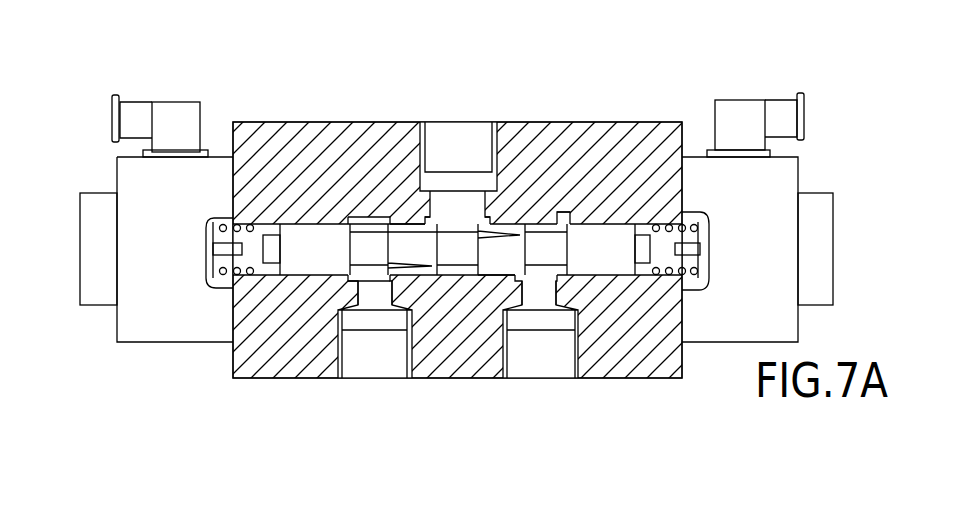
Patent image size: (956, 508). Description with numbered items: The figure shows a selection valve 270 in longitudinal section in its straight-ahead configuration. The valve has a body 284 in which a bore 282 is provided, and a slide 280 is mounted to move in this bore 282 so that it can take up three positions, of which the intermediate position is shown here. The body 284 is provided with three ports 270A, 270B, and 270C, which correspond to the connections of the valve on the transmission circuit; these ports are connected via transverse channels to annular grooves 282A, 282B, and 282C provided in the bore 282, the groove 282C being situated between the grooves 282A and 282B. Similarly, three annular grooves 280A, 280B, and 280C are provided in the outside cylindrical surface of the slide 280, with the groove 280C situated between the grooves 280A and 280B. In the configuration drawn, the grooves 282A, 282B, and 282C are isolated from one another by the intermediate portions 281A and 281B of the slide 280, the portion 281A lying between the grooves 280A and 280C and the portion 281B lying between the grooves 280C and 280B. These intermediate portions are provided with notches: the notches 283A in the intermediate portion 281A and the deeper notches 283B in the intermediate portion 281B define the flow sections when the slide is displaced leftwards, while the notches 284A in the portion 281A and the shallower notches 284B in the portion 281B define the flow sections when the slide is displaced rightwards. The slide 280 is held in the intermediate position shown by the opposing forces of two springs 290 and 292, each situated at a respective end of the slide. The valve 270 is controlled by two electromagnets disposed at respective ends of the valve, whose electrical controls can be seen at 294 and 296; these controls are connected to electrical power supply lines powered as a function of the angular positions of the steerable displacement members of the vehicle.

The selection valve 270 is at (272, 42).
The port 270A is at (348, 378).
The port 270B is at (520, 378).
The port 270C is at (442, 137).
The slide 280 is at (210, 263).
The annular groove 280A is at (378, 281).
The annular groove 280B is at (567, 222).
The annular groove 280C is at (460, 220).
The intermediate portion 281A is at (405, 218).
The intermediate portion 281B is at (505, 300).
The bore 282 is at (705, 268).
The annular groove 282A is at (357, 217).
The annular groove 282B is at (580, 275).
The annular groove 282C is at (447, 275).
The notches 283A is at (453, 226).
The notches 283B is at (565, 212).
The body 284 is at (265, 127).
The notches 284A is at (385, 305).
The notches 284B is at (490, 275).
The spring 290 is at (227, 220).
The spring 292 is at (700, 222).
The electrical control 294 is at (170, 110).
The electrical control 296 is at (730, 106).